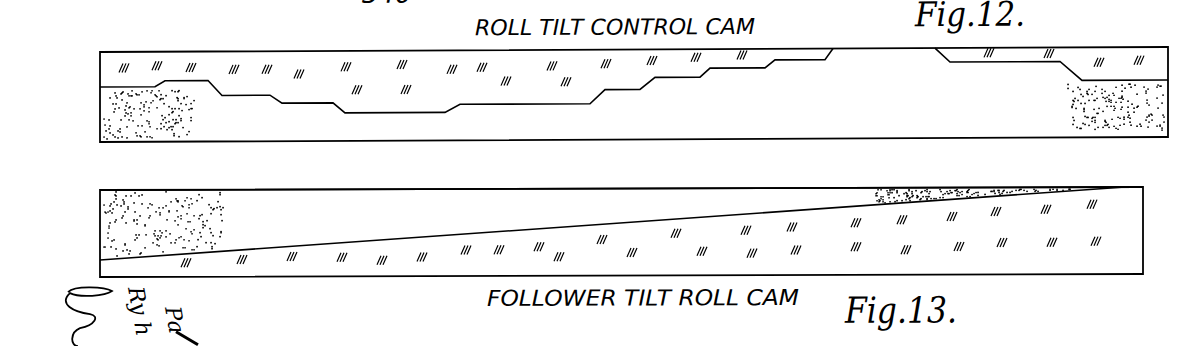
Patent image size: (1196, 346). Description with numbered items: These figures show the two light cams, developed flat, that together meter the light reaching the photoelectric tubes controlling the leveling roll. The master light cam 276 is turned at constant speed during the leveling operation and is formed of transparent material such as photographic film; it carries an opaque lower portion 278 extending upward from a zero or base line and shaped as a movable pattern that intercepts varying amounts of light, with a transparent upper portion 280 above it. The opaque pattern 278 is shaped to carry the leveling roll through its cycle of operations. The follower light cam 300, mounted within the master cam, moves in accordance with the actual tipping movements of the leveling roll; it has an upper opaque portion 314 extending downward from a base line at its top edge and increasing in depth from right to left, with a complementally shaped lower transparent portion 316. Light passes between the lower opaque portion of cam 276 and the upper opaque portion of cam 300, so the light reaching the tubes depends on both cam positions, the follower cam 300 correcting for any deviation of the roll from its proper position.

In FIG. 12, the master light cam 276 is at (100, 96).
In FIG. 12, the opaque lower portion 278 is at (1119, 118).
In FIG. 12, the transparent upper portion 280 is at (1123, 64).
In FIG. 13, the follower light cam 300 is at (100, 219).
In FIG. 13, the upper opaque portion 314 is at (355, 204).
In FIG. 13, the lower transparent portion 316 is at (430, 267).